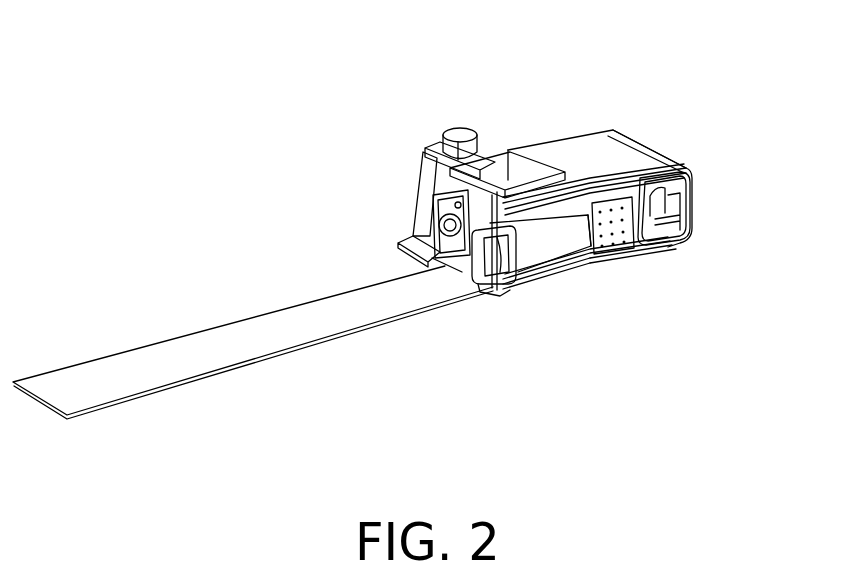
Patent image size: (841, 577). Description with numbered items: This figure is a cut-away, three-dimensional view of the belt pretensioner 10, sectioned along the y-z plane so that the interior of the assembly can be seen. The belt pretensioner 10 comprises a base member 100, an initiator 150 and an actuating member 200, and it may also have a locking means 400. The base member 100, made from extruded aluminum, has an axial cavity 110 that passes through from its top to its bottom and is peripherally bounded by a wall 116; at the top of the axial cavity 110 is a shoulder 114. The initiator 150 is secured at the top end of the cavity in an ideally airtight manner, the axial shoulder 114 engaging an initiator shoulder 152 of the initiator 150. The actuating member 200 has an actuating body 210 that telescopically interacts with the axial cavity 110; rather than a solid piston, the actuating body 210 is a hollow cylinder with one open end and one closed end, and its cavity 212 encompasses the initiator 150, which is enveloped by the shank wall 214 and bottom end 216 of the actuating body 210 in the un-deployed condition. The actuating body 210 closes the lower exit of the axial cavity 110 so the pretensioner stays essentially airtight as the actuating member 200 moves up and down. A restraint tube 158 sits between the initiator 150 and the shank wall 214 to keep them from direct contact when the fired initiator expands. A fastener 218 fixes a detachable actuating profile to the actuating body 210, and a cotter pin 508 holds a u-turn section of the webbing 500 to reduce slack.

The belt pretensioner 10 is at (171, 152).
The base member 100 is at (437, 182).
The axial cavity 110 is at (633, 263).
The axial shoulder 114 is at (500, 283).
The wall 116 is at (638, 170).
The initiator 150 is at (548, 247).
The initiator shoulder 152 is at (497, 292).
The restraint tube 158 is at (590, 250).
The actuating member 200 is at (648, 248).
The actuating body 210 is at (650, 255).
The cavity 212 is at (618, 173).
The shank wall 214 is at (672, 167).
The bottom end 216 is at (687, 232).
The fastener 218 is at (633, 210).
The locking means 400 is at (430, 223).
The webbing 500 is at (258, 338).
The cotter pin 508 is at (703, 187).